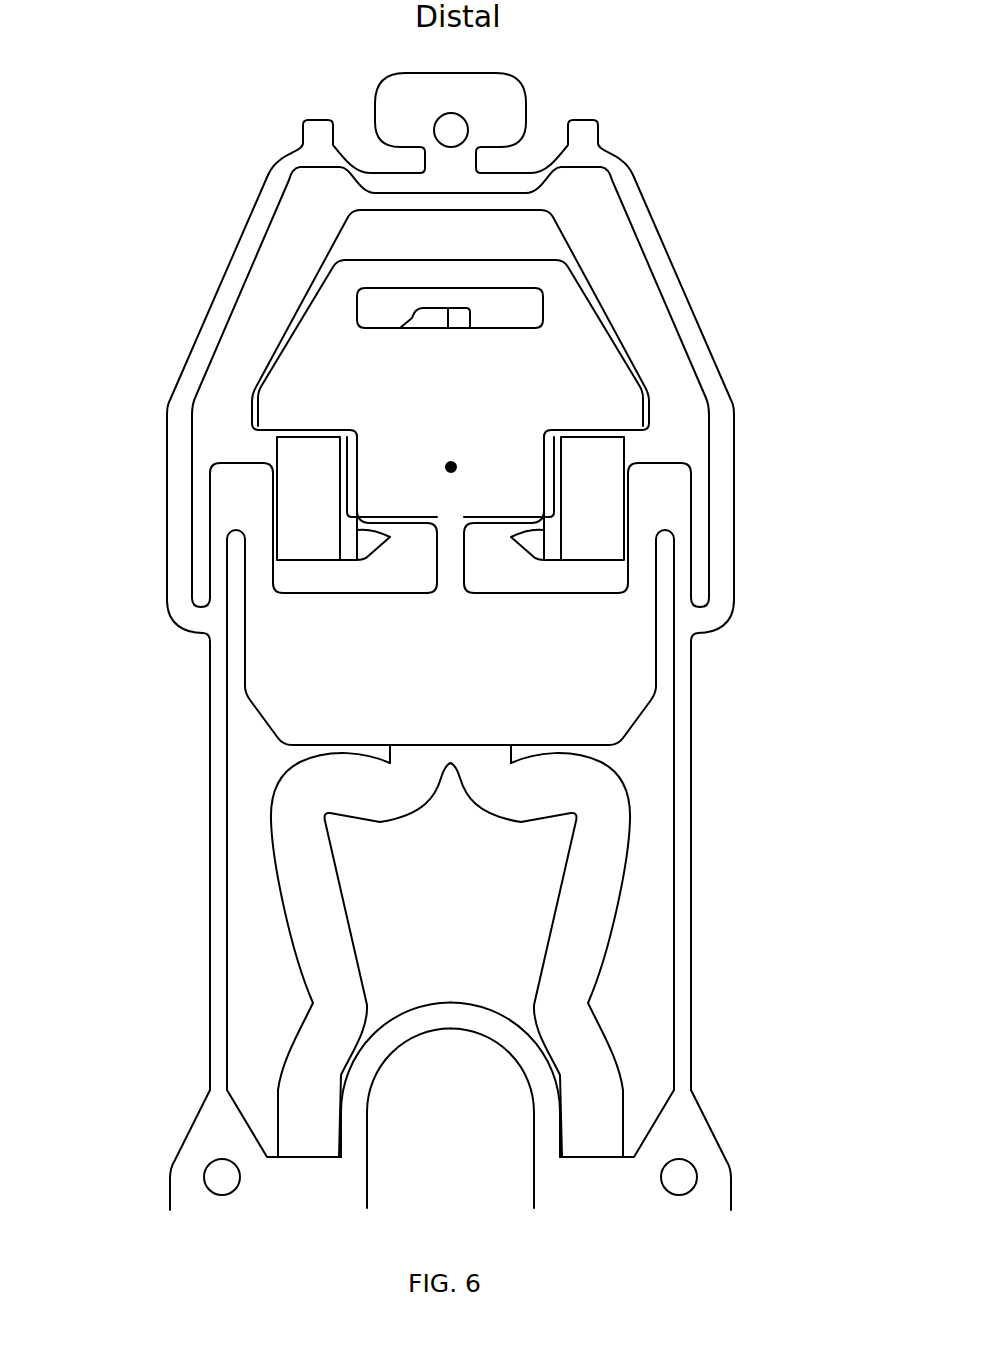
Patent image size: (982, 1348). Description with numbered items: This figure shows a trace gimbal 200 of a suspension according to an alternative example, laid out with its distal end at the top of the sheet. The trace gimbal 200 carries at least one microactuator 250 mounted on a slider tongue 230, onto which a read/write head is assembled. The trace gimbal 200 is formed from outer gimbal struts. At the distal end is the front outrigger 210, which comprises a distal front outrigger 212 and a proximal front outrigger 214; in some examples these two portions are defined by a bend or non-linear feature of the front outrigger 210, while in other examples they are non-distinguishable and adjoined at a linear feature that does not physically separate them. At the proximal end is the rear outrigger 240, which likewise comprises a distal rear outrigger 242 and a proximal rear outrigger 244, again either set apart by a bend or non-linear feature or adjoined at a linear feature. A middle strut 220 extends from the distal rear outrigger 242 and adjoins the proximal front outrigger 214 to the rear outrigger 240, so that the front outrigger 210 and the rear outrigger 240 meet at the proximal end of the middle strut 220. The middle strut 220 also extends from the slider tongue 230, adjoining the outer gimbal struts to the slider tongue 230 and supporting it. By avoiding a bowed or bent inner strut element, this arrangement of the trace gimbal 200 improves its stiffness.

The trace gimbal 200 is at (135, 160).
The front outrigger 210 is at (697, 297).
The distal front outrigger 212 is at (652, 178).
The proximal front outrigger 214 is at (727, 478).
The middle strut 220 is at (680, 573).
The slider tongue 230 is at (320, 650).
The rear outrigger 240 is at (696, 911).
The distal rear outrigger 242 is at (683, 756).
The proximal rear outrigger 244 is at (687, 1127).
The microactuator 250 is at (293, 530).